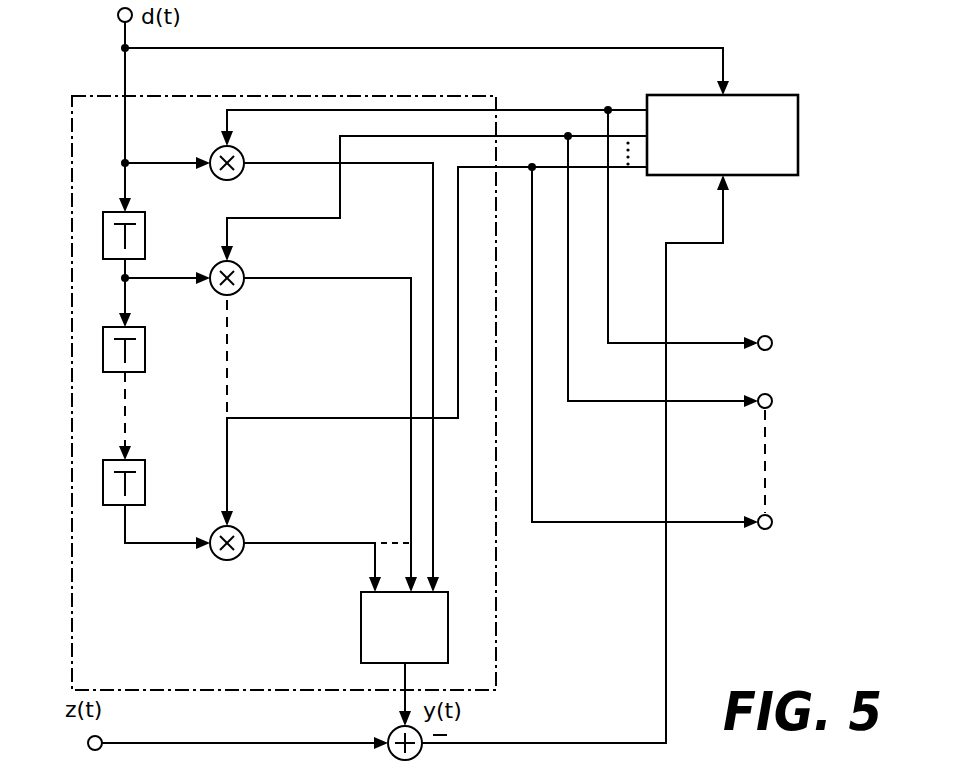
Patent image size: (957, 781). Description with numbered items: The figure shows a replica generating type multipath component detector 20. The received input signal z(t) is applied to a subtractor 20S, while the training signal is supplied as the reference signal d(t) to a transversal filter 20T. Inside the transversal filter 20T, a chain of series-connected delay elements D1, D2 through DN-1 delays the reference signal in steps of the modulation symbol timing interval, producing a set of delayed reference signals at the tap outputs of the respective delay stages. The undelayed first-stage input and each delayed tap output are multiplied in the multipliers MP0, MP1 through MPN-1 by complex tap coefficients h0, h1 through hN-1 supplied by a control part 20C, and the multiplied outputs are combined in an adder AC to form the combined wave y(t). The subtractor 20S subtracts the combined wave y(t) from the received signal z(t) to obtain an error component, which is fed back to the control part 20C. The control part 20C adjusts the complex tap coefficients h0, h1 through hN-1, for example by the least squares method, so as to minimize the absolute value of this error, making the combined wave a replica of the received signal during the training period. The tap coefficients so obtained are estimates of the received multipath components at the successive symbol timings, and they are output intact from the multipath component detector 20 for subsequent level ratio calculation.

The multipath component detector 20 is at (742, 666).
The control part 20C is at (757, 95).
The transversal filter 20T is at (498, 563).
The subtractor 20S is at (393, 733).
The multiplier MP0 is at (240, 152).
The multiplier MP1 is at (240, 265).
The multiplier MPN-1 is at (216, 557).
The delay element D1 is at (145, 229).
The delay element D2 is at (145, 343).
The delay element DN-1 is at (145, 470).
The adder AC is at (361, 607).
The complex tap coefficient h0 is at (694, 230).
The complex tap coefficient h1 is at (687, 272).
The complex tap coefficient hN-1 is at (670, 369).